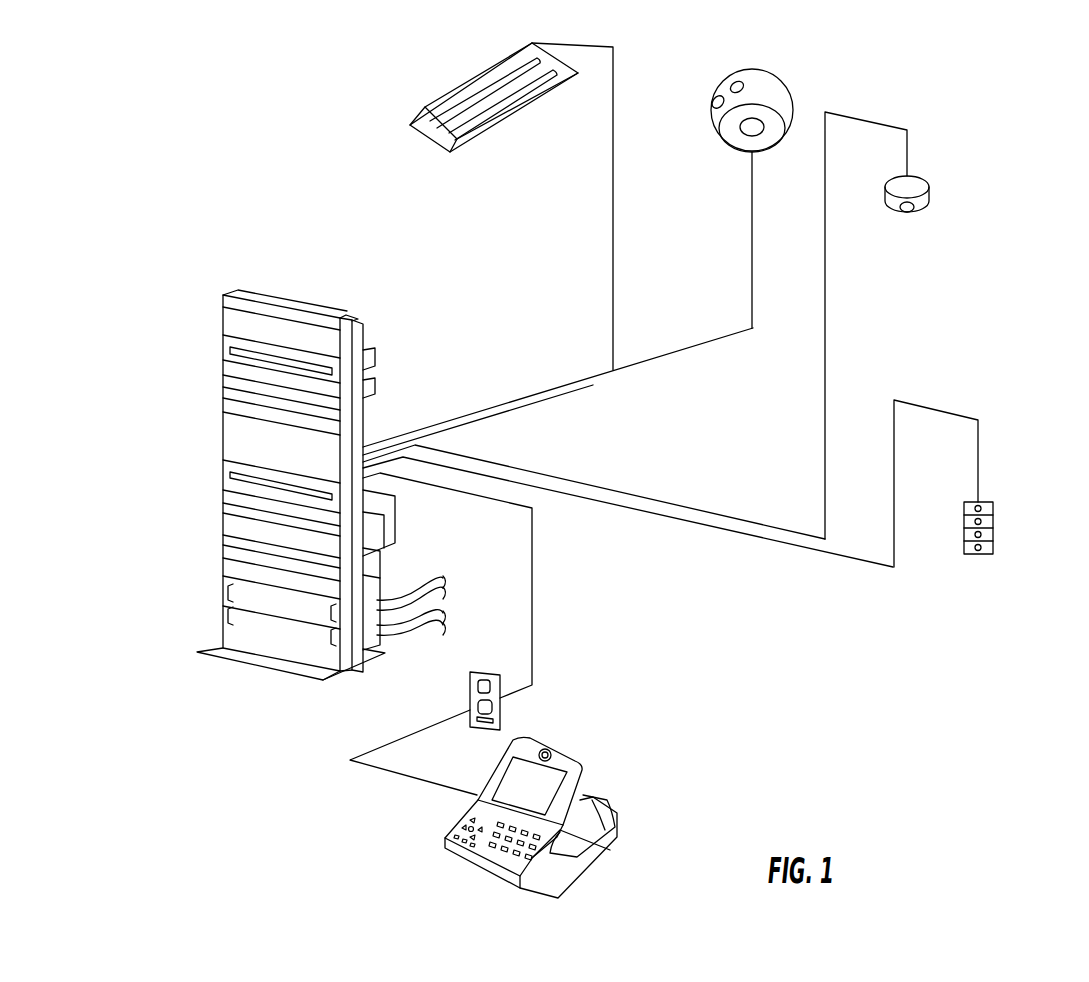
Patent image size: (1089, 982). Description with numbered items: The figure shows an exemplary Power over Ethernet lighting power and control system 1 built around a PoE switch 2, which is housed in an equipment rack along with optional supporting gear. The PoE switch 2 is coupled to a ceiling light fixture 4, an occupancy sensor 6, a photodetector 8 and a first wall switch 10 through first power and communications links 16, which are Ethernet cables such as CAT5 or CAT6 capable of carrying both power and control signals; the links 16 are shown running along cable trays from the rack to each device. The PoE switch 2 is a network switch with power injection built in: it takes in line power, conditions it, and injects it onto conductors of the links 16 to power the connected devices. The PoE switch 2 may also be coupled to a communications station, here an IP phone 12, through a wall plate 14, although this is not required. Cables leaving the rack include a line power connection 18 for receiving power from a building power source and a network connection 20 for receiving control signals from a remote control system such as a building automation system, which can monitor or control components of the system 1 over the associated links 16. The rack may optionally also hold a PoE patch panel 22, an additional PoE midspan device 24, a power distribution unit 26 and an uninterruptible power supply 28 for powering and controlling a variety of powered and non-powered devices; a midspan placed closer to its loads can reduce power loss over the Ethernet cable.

The lighting power and control system 1 is at (338, 194).
The PoE switch 2 is at (268, 485).
The light fixture 4 is at (452, 90).
The occupancy sensor 6 is at (735, 74).
The photodetector 8 is at (929, 211).
The first wall switch 10 is at (993, 548).
The IP phone 12 is at (642, 801).
The wall plate 14 is at (485, 672).
The first power and communications links 16 is at (549, 530).
The line power connection 18 is at (407, 633).
The network connection 20 is at (412, 599).
The PoE patch panel 22 is at (223, 477).
The additional PoE midspan device 24 is at (223, 490).
The power distribution unit 26 is at (223, 543).
The uninterruptible power supply 28 is at (255, 598).